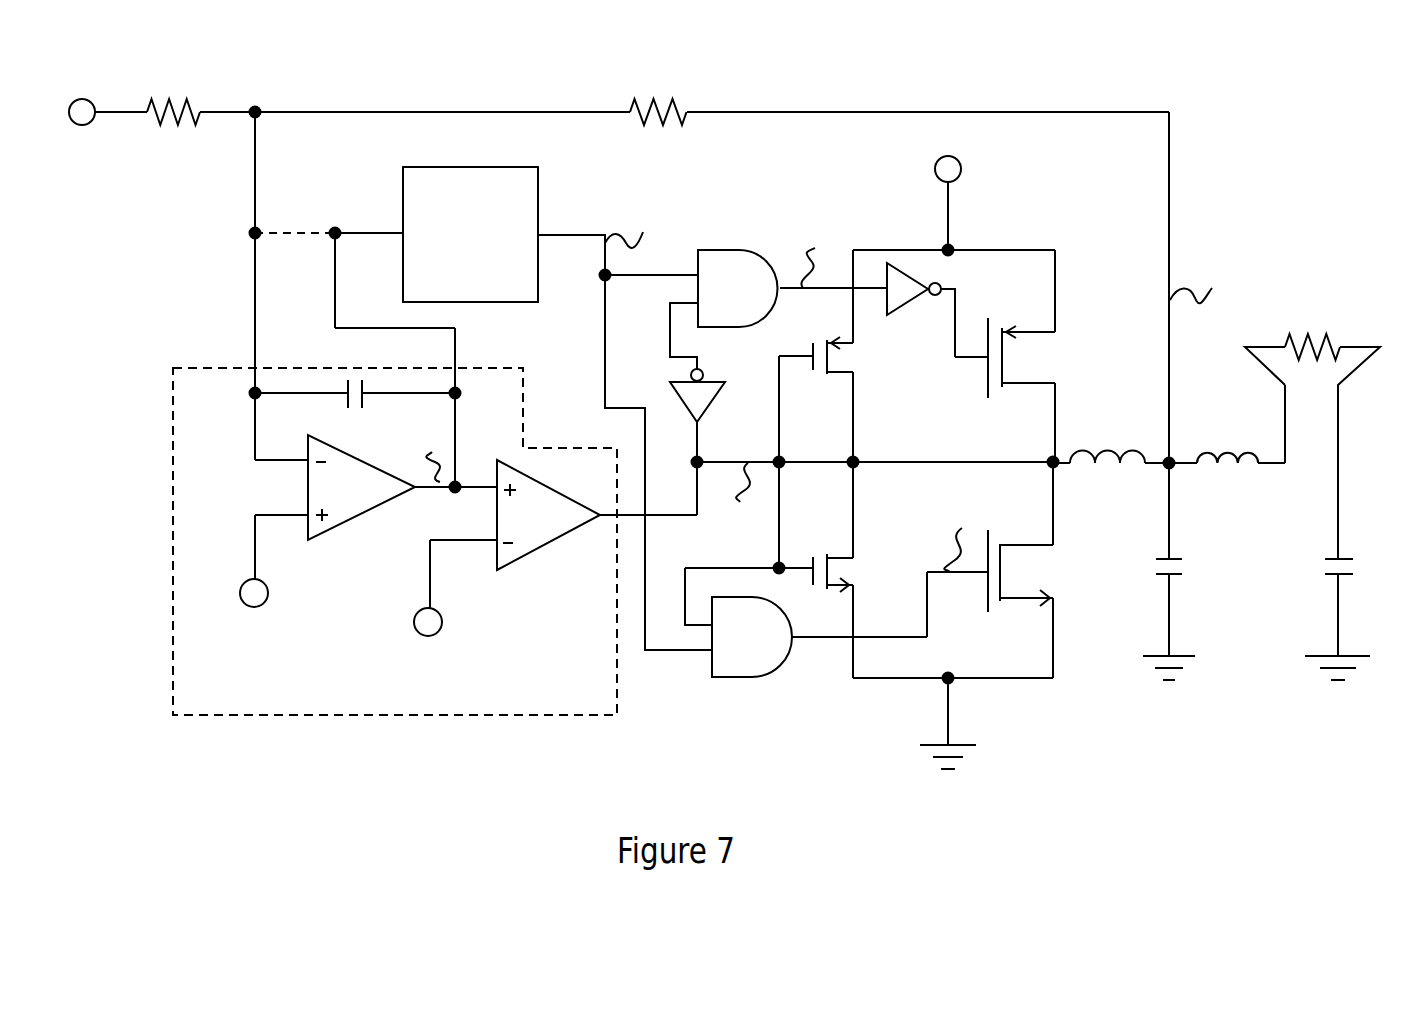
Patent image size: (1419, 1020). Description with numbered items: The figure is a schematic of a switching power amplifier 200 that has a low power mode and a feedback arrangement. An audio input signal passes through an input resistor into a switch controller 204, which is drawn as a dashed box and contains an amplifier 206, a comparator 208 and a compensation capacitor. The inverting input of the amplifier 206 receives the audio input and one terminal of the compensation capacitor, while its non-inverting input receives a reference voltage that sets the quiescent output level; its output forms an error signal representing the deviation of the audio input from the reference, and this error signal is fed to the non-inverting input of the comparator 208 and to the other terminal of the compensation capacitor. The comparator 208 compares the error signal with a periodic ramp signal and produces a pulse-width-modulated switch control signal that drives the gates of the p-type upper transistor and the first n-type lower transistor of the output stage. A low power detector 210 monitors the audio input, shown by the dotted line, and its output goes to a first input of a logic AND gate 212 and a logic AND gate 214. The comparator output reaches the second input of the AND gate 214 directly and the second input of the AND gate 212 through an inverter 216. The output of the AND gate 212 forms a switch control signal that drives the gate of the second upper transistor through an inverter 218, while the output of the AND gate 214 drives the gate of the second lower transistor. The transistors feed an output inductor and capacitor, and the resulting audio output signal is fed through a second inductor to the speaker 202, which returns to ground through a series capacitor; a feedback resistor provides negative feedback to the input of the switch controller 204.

The switching power amplifier 200 is at (1036, 66).
The speaker 202 is at (1360, 345).
The switch controller 204 is at (203, 366).
The amplifier 206 is at (330, 530).
The comparator 208 is at (530, 548).
The low power detector 210 is at (540, 182).
The logic AND gate 212 is at (722, 250).
The logic AND gate 214 is at (745, 677).
The inverter 216 is at (691, 376).
The inverter 218 is at (913, 278).